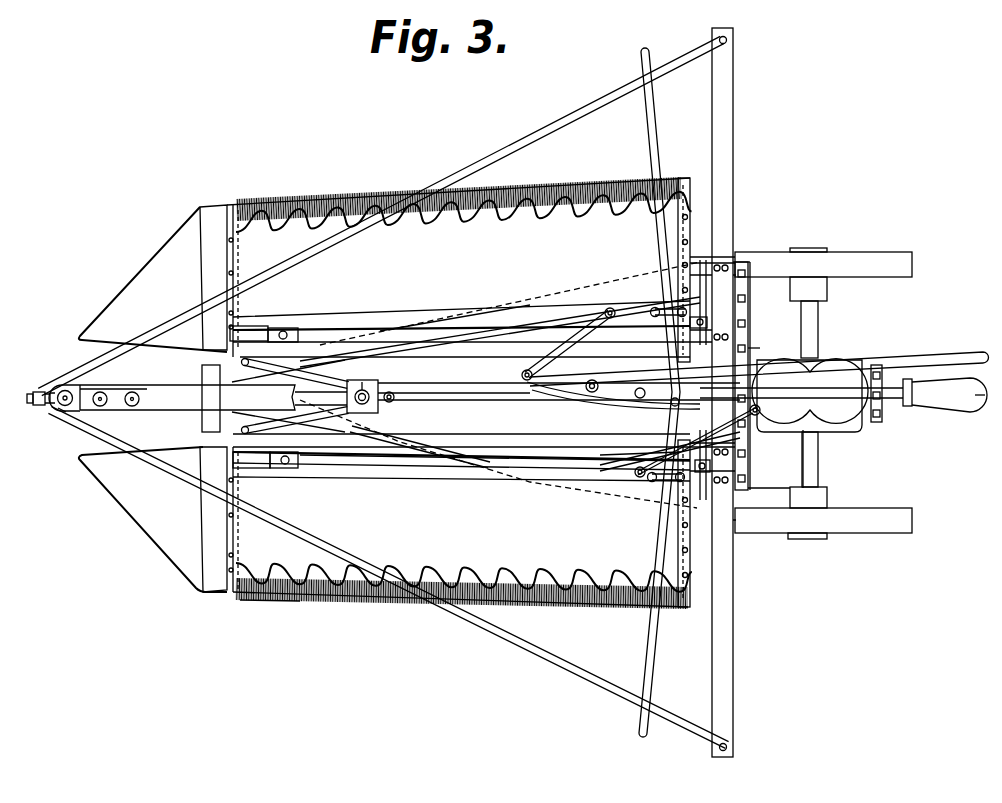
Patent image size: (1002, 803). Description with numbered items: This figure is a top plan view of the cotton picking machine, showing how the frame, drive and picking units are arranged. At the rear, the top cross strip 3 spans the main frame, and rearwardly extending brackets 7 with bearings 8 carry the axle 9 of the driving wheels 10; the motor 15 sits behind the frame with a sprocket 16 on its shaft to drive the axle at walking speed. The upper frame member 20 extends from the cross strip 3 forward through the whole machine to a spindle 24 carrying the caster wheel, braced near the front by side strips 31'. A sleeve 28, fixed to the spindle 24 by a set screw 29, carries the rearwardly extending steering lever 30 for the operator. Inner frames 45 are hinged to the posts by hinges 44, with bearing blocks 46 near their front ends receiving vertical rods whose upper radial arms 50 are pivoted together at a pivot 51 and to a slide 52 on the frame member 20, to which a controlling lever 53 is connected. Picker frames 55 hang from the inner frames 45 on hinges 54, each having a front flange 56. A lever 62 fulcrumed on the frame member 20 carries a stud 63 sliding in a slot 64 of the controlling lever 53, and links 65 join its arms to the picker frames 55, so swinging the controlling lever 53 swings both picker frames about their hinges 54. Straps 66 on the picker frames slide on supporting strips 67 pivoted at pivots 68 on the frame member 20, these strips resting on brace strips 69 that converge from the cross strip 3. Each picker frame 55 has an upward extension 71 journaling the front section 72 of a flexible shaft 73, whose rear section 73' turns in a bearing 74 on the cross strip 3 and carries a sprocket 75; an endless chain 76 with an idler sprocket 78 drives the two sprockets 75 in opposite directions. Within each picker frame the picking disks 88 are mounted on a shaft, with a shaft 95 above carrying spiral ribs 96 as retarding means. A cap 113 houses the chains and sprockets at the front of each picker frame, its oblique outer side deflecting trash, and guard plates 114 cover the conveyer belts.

The top cross strip 3 is at (735, 655).
The bracket 7 is at (813, 300).
The bearing 8 is at (826, 292).
The axle 9 is at (815, 360).
The driving wheel 10 is at (902, 265).
The motor 15 is at (848, 412).
The sprocket 16 is at (905, 380).
The upper frame member 20 is at (483, 392).
The spindle 24 is at (66, 410).
The sleeve 28 is at (76, 388).
The set screw 29 is at (38, 391).
The steering lever 30 is at (175, 398).
The side strip 31' is at (171, 370).
The hinge 44 is at (618, 462).
The inner frame 45 is at (618, 440).
The bearing block 46 is at (241, 362).
The radial arm 50 is at (290, 370).
The pivotal connection 51 is at (364, 380).
The slide 52 is at (372, 385).
The controlling lever 53 is at (877, 365).
The hinge 54 is at (210, 328).
The picker frame 55 is at (480, 320).
The flange 56 is at (220, 592).
The lever 62 is at (557, 377).
The stud 63 is at (592, 380).
The slot 64 is at (648, 405).
The link 65 is at (547, 353).
The strap 66 is at (695, 268).
The supporting strip 67 is at (656, 138).
The pivot 68 is at (744, 350).
The brace strip 69 is at (558, 123).
The upward extension 71 is at (245, 332).
The front section 72 is at (283, 335).
The flexible shaft 73 is at (500, 375).
The rear section 73' is at (772, 408).
The bearing 74 is at (748, 305).
The sprocket 75 is at (749, 320).
The endless chain 76 is at (770, 376).
The idler sprocket 78 is at (741, 262).
The picking disk 88 is at (275, 598).
The shaft 95 is at (430, 212).
The spiral rib 96 is at (322, 198).
The cap 113 is at (141, 268).
The guard plate 114 is at (420, 544).